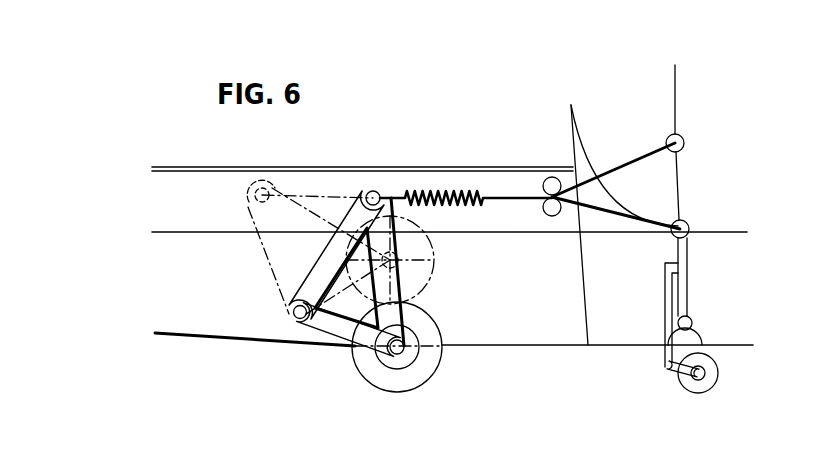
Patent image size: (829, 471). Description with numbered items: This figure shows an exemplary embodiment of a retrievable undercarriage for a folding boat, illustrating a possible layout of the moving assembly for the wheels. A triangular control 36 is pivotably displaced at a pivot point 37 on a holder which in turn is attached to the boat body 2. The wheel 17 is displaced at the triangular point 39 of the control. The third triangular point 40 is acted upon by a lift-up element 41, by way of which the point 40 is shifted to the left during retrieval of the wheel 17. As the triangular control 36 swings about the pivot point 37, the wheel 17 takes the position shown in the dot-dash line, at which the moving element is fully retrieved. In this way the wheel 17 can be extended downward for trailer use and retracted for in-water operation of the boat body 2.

The boat body 2 is at (205, 317).
The wheel 17 is at (438, 282).
The triangular control 36 is at (314, 278).
The pivot point 37 is at (299, 320).
The triangular point 39 is at (395, 350).
The third triangular point 40 is at (373, 186).
The lift-up element 41 is at (394, 192).